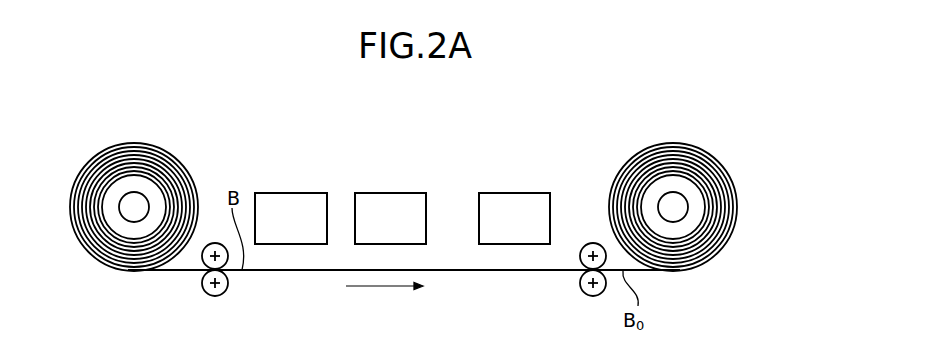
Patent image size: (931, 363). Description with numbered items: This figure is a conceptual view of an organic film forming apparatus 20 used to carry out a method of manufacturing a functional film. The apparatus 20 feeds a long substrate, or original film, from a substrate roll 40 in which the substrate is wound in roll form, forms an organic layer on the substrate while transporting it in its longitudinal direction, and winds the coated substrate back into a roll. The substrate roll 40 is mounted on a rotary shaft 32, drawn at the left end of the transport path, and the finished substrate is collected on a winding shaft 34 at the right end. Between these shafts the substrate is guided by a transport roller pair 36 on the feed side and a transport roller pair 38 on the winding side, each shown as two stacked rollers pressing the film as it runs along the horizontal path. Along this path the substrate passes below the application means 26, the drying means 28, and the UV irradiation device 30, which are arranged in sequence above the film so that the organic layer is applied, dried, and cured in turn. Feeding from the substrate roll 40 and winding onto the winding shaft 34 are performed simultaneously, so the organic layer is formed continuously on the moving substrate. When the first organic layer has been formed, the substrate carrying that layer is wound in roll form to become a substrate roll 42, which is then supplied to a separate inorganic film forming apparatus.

The organic film forming apparatus 20 is at (573, 128).
The application means 26 is at (288, 207).
The drying means 28 is at (387, 207).
The UV irradiation device 30 is at (513, 207).
The rotary shaft 32 is at (134, 205).
The winding shaft 34 is at (672, 205).
The transport roller pair 36 is at (202, 284).
The transport roller pair 38 is at (580, 284).
The substrate roll 40 is at (179, 160).
The substrate roll 42 is at (727, 172).